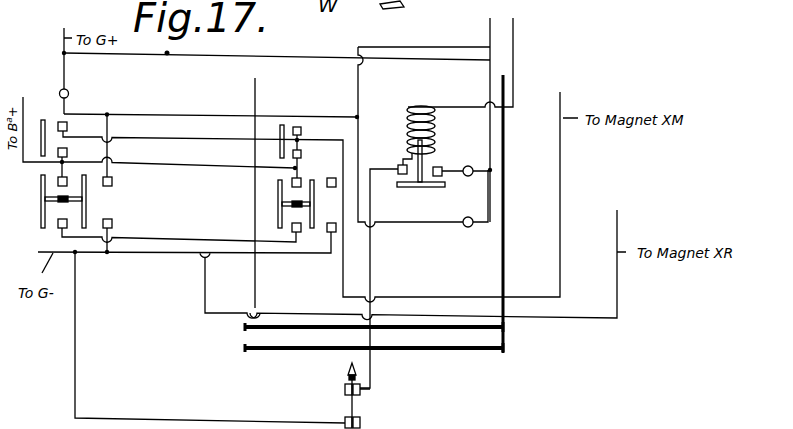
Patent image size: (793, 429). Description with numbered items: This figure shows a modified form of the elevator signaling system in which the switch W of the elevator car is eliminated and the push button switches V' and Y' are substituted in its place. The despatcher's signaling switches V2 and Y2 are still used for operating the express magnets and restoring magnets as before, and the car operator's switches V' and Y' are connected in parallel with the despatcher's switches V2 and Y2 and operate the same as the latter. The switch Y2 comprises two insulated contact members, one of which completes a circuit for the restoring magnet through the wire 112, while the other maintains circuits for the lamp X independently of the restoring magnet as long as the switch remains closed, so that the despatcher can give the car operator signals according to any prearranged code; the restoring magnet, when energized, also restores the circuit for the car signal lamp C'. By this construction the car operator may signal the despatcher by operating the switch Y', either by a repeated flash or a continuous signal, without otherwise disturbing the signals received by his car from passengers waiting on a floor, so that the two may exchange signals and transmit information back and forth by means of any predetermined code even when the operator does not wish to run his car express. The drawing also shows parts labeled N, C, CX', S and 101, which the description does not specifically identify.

The signal lamp X is at (69, 93).
The despatcher's signaling switch V2 is at (41, 127).
The push button switch V' is at (283, 133).
The despatcher's signaling switch Y2 is at (41, 200).
The push button switch Y' is at (295, 205).
The relay magnet N is at (436, 142).
The contact C is at (461, 192).
The car signal lamp C' is at (526, 213).
The contact CX' is at (447, 239).
The switch S is at (358, 406).
The conductor 101 is at (513, 43).
The wire 112 is at (581, 321).